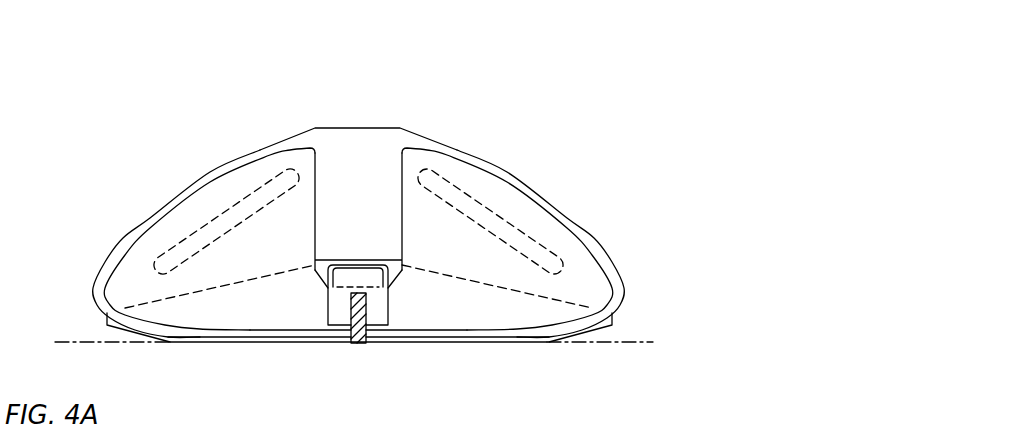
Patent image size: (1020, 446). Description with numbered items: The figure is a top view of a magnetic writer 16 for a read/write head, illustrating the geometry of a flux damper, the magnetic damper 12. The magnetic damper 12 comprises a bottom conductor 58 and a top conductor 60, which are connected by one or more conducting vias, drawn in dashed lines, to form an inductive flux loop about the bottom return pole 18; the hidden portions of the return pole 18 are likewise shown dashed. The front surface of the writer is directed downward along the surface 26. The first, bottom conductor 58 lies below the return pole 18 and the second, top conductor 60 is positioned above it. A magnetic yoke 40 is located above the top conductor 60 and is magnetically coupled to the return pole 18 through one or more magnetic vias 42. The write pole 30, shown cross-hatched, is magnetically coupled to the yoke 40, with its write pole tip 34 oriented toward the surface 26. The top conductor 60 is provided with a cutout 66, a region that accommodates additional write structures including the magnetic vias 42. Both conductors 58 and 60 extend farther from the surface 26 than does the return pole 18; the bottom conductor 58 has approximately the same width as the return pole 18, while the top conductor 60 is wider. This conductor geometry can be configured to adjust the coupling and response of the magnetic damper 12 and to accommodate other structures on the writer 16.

The magnetic damper 12 is at (155, 189).
The magnetic writer 16 is at (635, 111).
The bottom return pole 18 is at (611, 317).
The surface 26 is at (258, 352).
The write pole 30 is at (351, 297).
The write pole tip 34 is at (361, 352).
The magnetic yoke 40 is at (372, 302).
The magnetic via 42 is at (362, 272).
The bottom conductor 58 is at (300, 129).
The top conductor 60 is at (122, 262).
The cutout 66 is at (346, 146).